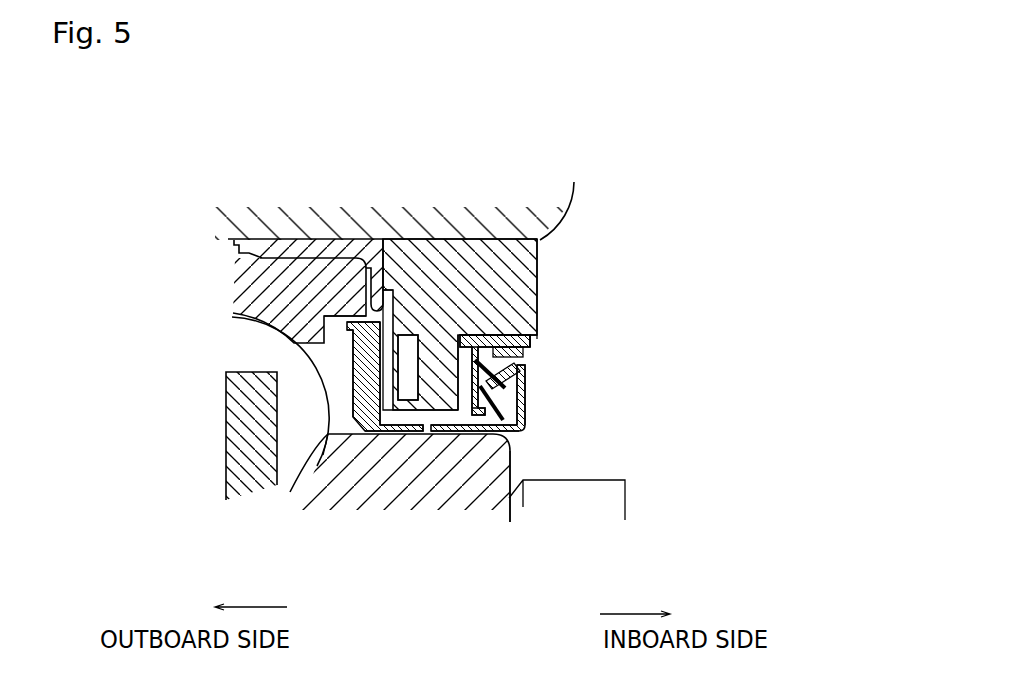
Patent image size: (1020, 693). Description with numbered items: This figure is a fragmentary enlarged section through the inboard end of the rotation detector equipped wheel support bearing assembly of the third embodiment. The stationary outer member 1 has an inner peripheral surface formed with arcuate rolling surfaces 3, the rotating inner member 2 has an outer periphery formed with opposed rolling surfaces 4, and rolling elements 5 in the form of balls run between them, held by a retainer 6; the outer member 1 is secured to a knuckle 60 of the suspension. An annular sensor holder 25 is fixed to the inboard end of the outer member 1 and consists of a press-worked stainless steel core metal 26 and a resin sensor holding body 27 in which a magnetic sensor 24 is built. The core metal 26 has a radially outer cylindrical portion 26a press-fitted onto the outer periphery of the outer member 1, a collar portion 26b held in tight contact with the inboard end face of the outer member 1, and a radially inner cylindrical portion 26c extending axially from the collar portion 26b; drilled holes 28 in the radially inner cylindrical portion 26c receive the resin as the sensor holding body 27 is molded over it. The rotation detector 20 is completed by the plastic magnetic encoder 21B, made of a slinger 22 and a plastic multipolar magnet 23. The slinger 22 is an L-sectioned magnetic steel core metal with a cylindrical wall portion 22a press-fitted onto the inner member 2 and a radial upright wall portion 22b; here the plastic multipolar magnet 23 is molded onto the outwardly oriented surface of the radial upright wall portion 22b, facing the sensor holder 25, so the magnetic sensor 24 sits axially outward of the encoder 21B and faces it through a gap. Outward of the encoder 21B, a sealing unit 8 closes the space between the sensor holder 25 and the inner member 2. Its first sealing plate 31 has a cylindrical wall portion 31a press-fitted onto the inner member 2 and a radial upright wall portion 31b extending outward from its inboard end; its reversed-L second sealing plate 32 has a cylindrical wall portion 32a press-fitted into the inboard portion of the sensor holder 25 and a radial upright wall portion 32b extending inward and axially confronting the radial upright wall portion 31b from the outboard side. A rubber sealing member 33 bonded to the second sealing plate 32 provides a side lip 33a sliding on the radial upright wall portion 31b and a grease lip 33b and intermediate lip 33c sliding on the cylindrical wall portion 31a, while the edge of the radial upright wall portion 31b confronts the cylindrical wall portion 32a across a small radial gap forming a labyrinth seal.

The outer member 1 is at (262, 277).
The inner member 2 is at (487, 490).
The rolling surfaces 3 is at (232, 318).
The rolling surfaces 4 is at (290, 492).
The rolling elements 5 is at (305, 432).
The retainer 6 is at (233, 470).
The sealing unit 8 is at (573, 355).
The seal assembly 20 is at (397, 78).
The plastic magnetic encoder 21B is at (334, 305).
The slinger 22 is at (338, 384).
The cylindrical wall portion 22a is at (377, 433).
The radial upright wall portion 22b is at (350, 347).
The plastic multipolar magnet 23 is at (362, 367).
The magnetic sensor 24 is at (425, 290).
The sensor holder 25 is at (484, 78).
The core metal 26 is at (522, 333).
The radially outer cylindrical portion 26a is at (338, 290).
The collar portion 26b is at (410, 330).
The radially inner cylindrical portion 26c is at (534, 333).
The sensor holding body 27 is at (470, 270).
The drilled hole 28 is at (452, 355).
The first sealing plate 31 is at (541, 416).
The cylindrical wall portion 31a is at (490, 432).
The radial upright wall portion 31b is at (522, 388).
The second sealing plate 32 is at (433, 432).
The cylindrical wall portion 32a is at (511, 324).
The radial upright wall portion 32b is at (403, 432).
The sealing member 33 is at (514, 399).
The side lip 33a is at (507, 357).
The grease lip 33b is at (453, 432).
The intermediate lip 33c is at (525, 428).
The knuckle 60 is at (579, 224).